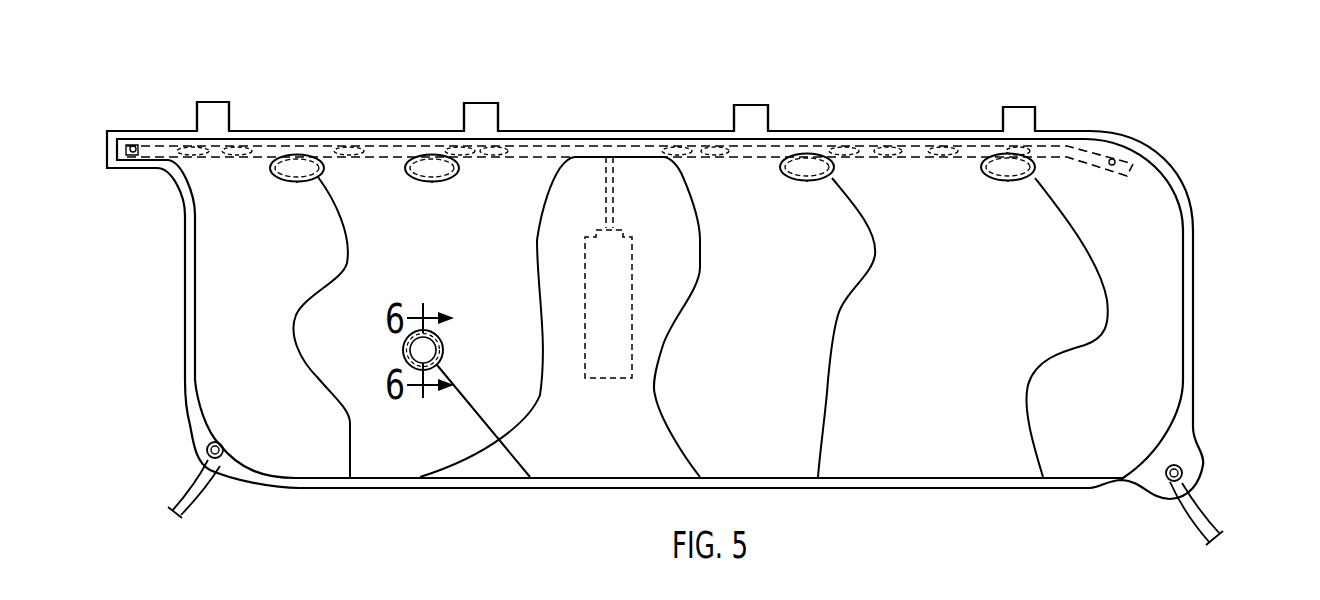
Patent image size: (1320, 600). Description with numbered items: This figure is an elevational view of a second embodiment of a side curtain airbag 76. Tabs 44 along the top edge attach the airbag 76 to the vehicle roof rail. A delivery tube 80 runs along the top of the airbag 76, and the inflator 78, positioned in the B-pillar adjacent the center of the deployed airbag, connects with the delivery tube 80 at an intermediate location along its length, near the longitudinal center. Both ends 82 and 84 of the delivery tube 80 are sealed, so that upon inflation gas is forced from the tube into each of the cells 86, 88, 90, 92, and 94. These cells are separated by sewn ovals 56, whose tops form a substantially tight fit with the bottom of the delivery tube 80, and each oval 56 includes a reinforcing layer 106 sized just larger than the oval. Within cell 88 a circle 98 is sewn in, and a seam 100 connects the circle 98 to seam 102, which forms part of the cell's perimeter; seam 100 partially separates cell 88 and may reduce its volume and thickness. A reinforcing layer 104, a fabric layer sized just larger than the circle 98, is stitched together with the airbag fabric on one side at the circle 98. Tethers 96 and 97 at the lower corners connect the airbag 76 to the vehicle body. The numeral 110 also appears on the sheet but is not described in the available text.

The airbag 76 is at (381, 86).
The tabs 44 is at (214, 112).
The sewn ovals 56 is at (296, 170).
The inflator 78 is at (632, 298).
The delivery tube 80 is at (589, 151).
The end 82 is at (133, 145).
The end 84 is at (1114, 158).
The cell 86 is at (260, 362).
The cell 88 is at (405, 276).
The cell 90 is at (780, 368).
The cell 92 is at (958, 368).
The cell 94 is at (1152, 375).
The tether 96 is at (183, 492).
The tether 97 is at (1212, 513).
The circle 98 is at (444, 351).
The seam 100 is at (487, 415).
The seam 102 is at (541, 397).
The reinforcing layer 104 is at (403, 350).
The reinforcing layer 106 is at (297, 183).
The lower edge 110 is at (792, 595).